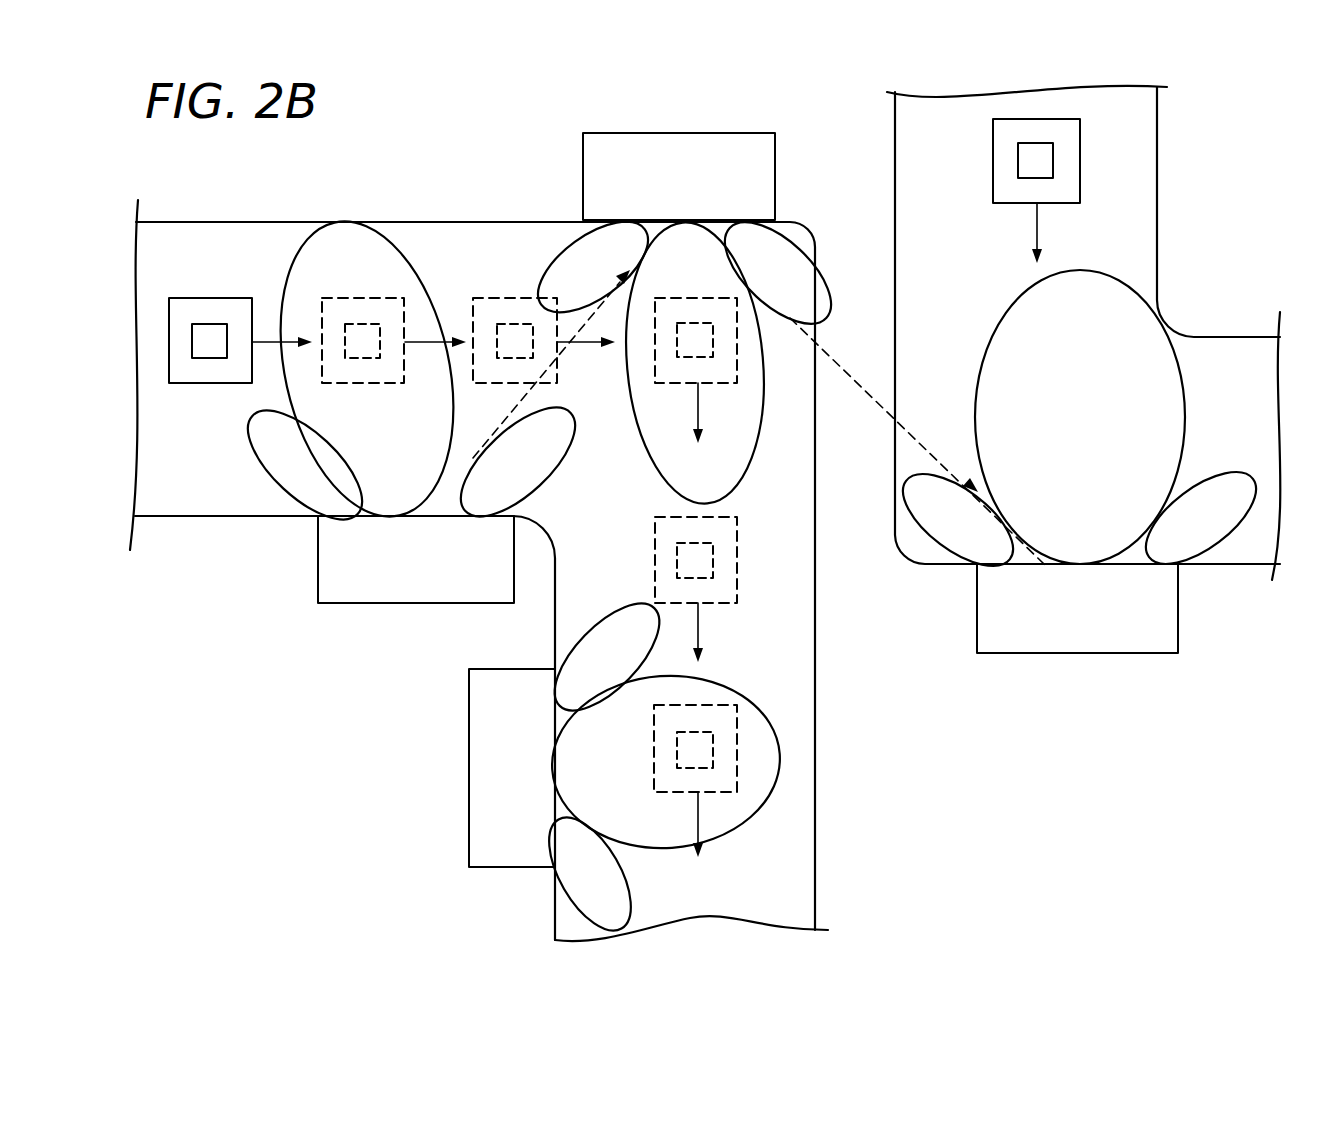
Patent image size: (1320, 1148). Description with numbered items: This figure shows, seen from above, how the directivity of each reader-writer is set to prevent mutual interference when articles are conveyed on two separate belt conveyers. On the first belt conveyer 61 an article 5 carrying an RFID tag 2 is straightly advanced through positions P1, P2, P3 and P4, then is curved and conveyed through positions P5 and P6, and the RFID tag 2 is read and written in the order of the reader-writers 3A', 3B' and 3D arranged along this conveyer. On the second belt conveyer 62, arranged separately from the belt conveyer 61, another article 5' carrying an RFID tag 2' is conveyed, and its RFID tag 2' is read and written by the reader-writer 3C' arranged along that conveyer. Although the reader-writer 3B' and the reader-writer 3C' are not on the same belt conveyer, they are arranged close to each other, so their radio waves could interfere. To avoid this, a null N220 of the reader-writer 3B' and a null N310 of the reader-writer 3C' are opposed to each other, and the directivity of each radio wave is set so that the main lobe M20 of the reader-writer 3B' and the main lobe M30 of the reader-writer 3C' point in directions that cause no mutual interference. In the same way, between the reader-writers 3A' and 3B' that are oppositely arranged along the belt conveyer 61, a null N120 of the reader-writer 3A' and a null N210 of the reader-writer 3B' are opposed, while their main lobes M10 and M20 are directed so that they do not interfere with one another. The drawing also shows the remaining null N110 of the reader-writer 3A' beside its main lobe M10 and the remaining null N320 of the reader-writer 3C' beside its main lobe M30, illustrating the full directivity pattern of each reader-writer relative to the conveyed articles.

The RFID tag 2 is at (202, 307).
The article 5 is at (224, 320).
The RFID tag 2' is at (1068, 151).
The article 5' is at (1061, 161).
The belt conveyer 61 is at (153, 518).
The belt conveyer 62 is at (1157, 215).
The reader-writer 3A' is at (374, 559).
The reader-writer 3B' is at (722, 176).
The reader-writer 3C' is at (1121, 608).
The reader-writer 3D is at (512, 868).
The position P1 is at (217, 298).
The position P2 is at (390, 298).
The position P3 is at (530, 298).
The position P4 is at (737, 298).
The position P5 is at (740, 545).
The position P6 is at (737, 735).
The main lobe M10 is at (392, 258).
The main lobe M20 is at (760, 448).
The main lobe M30 is at (1043, 278).
The null N110 is at (316, 430).
The null N120 is at (466, 448).
The null N210 is at (553, 300).
The null N220 is at (765, 322).
The null N310 is at (970, 482).
The null N320 is at (1198, 470).